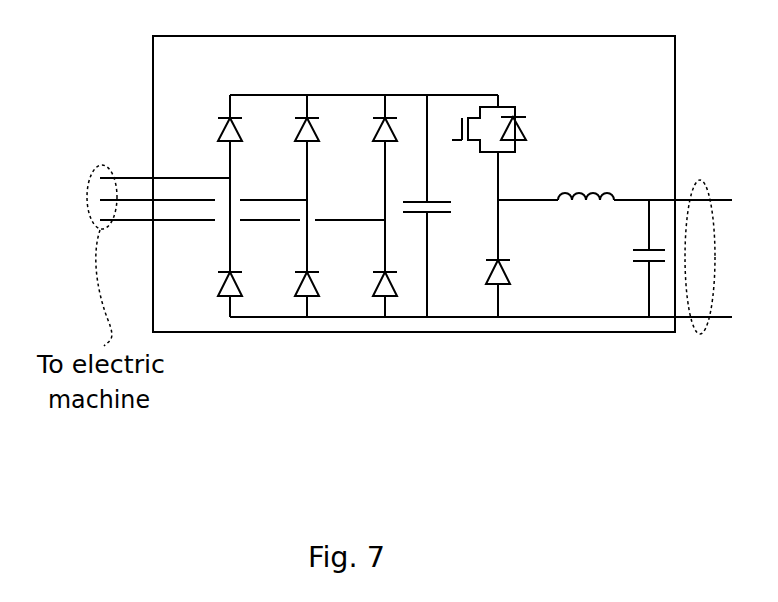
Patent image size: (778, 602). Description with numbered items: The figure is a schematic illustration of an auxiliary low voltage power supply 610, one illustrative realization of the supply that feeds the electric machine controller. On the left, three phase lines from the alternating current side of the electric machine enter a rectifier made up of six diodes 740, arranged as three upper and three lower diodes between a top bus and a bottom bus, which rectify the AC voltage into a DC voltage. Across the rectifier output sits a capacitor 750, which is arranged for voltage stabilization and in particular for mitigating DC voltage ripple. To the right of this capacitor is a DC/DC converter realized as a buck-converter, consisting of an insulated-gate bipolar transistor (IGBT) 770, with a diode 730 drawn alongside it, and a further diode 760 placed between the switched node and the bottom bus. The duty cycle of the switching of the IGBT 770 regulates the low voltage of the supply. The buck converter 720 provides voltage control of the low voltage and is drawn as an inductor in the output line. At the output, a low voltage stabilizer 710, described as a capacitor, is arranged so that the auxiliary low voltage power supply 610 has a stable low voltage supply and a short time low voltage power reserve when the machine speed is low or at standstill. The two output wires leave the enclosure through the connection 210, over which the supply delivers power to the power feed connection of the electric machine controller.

The auxiliary low voltage power supply 610 is at (436, 72).
The diodes 740 is at (222, 116).
The capacitor 750 is at (443, 214).
The insulated-gate bipolar transistor (IGBT) 770 is at (465, 117).
The diode 730 is at (526, 131).
The diode 760 is at (512, 270).
The buck converter 720 is at (592, 188).
The low voltage stabilizer 710 is at (644, 249).
The connection 210 is at (702, 335).